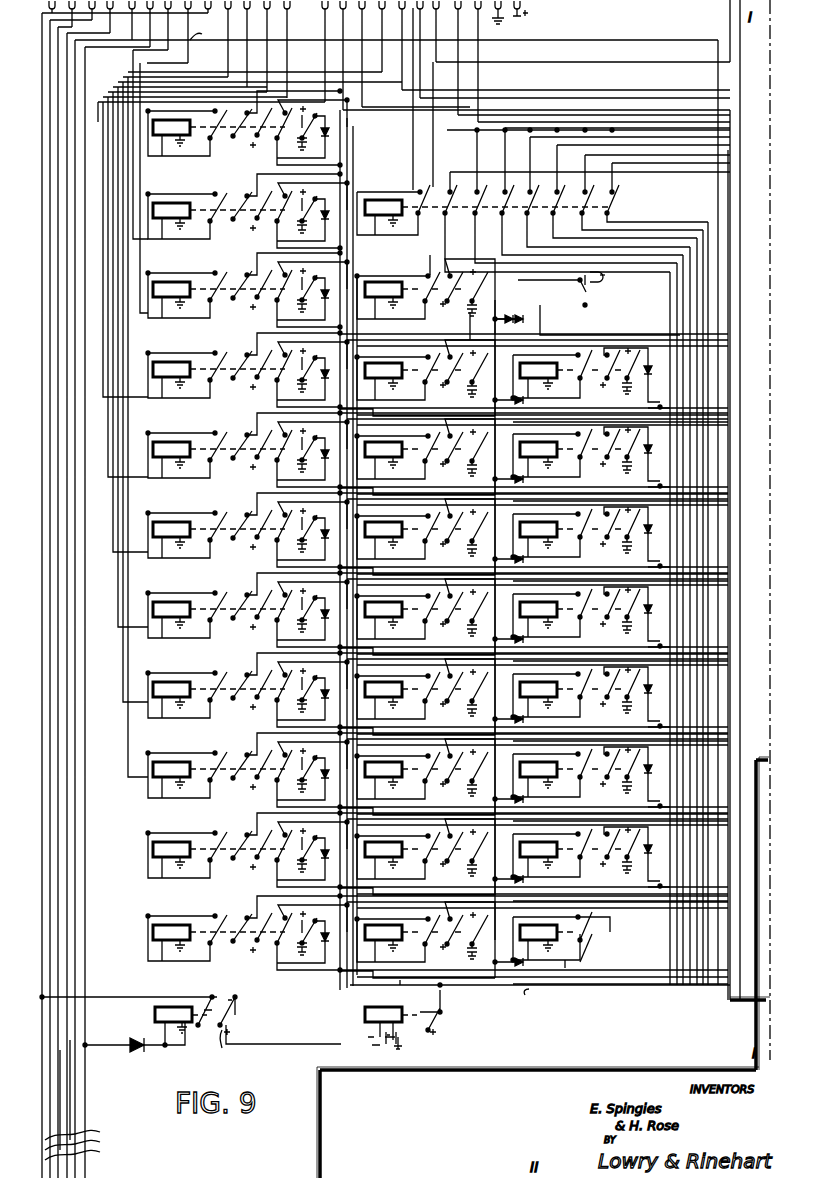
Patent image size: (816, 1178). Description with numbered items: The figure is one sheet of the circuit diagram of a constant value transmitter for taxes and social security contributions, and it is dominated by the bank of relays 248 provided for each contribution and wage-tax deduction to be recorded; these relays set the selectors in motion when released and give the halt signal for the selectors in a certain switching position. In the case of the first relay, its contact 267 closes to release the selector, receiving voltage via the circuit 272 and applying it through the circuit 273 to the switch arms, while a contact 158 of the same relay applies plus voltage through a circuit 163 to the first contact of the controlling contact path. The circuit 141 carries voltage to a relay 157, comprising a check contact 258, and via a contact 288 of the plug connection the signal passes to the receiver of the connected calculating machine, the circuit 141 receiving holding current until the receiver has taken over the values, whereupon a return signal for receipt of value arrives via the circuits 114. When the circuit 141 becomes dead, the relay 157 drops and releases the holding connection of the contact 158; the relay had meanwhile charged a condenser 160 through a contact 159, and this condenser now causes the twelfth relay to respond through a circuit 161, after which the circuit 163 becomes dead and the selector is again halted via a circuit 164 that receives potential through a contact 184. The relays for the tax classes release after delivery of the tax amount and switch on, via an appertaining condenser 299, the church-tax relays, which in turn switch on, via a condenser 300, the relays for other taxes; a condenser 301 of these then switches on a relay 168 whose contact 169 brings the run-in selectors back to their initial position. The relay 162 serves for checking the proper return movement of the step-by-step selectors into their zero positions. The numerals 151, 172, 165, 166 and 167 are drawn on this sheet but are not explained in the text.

The relay 248 is at (437, 499).
The condenser 299 is at (276, 715).
The condenser 300 is at (470, 710).
The condenser 301 is at (609, 630).
The conductor 151 is at (396, 505).
The conductor 172 is at (188, 585).
The circuit 141 is at (195, 588).
The contact of the plug connection 288 is at (307, 14).
The circuit 272 is at (565, 70).
The circuit 163 is at (658, 107).
The contact 159 is at (315, 111).
The condenser 160 is at (304, 139).
The circuit 161 is at (300, 154).
The contact 267 is at (240, 151).
The contact 158 is at (228, 142).
The contact 184 is at (435, 263).
The diode 165 is at (486, 276).
The capacitor 166 is at (486, 314).
The contact 167 is at (500, 300).
The circuit 164 is at (614, 271).
The relay 168 is at (560, 937).
The contact 169 is at (593, 938).
The relay 162 is at (385, 1010).
The relay 157 is at (154, 1016).
The check contact 258 is at (232, 1046).
The circuit 273 is at (540, 995).
The circuits 114 is at (95, 595).